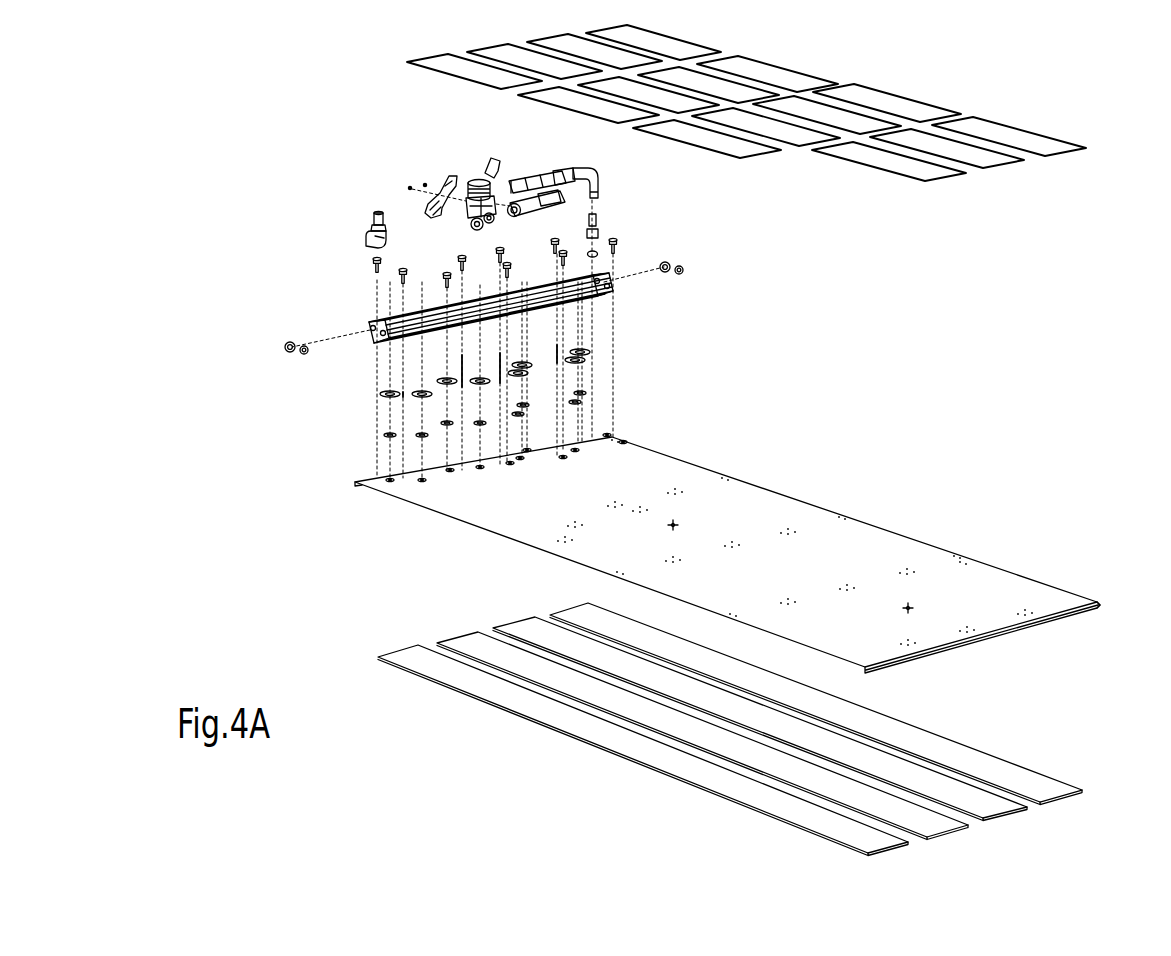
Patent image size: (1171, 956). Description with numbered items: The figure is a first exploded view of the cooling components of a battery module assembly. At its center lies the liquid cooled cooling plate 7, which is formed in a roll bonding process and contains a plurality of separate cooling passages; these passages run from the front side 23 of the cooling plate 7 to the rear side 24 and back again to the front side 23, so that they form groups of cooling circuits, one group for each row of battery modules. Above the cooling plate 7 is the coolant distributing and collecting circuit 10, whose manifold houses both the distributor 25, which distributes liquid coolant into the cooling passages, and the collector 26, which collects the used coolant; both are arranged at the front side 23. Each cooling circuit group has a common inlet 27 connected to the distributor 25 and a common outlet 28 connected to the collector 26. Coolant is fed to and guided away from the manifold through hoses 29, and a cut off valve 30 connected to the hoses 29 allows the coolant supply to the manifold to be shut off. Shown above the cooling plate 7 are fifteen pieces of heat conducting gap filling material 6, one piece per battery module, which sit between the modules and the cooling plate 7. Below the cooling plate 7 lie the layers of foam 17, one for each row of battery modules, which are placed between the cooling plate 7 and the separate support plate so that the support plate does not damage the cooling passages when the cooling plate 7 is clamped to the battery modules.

The heat conducting gap filling material 6 is at (977, 125).
The cooling plate 7 is at (868, 543).
The coolant distributing and collecting circuit 10 is at (267, 218).
The layer of foam 17 is at (927, 818).
The front side 23 is at (338, 475).
The rear side 24 is at (1090, 618).
The distributor 25 is at (617, 293).
The collector 26 is at (368, 322).
The common inlet 27 is at (575, 445).
The common outlet 28 is at (582, 435).
The hoses 29 is at (377, 213).
The cut off valve 30 is at (472, 178).